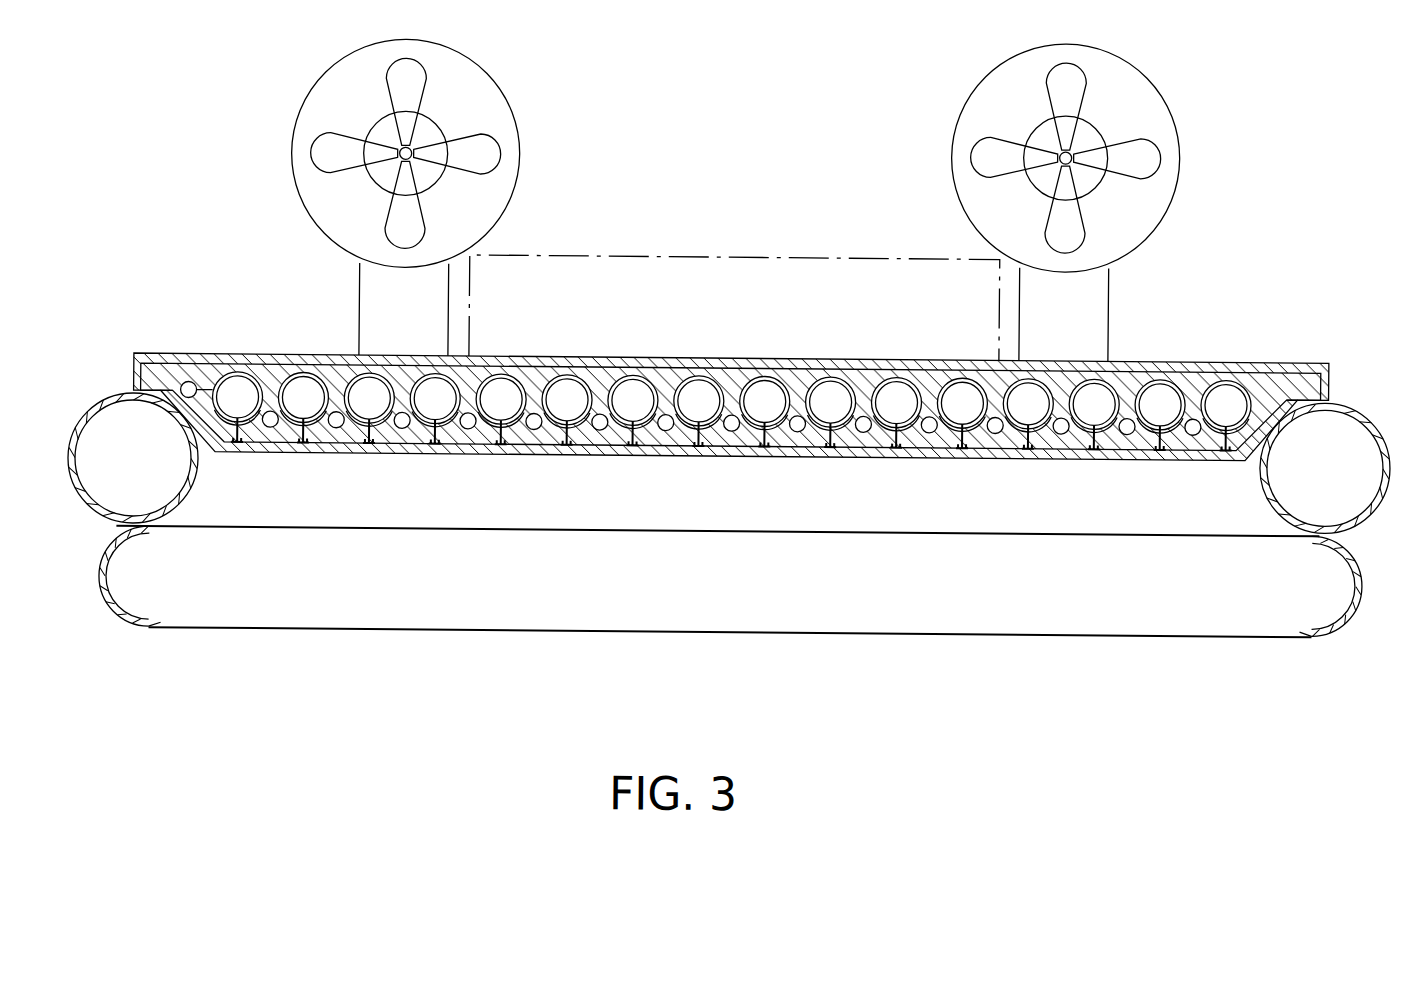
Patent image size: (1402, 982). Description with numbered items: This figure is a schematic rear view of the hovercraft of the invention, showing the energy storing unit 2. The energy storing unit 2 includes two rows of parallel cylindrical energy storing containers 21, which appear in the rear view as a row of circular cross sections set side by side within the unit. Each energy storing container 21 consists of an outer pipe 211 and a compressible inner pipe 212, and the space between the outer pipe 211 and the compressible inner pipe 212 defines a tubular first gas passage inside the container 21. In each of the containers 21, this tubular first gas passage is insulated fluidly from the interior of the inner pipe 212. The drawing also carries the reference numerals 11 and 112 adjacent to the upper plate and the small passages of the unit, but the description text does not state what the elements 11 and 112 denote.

The energy storing unit 2 is at (1313, 377).
The top plate 11 is at (1217, 357).
The energy storing container 21 is at (1267, 393).
The outer pipe 211 is at (1015, 441).
The compressible inner pipe 212 is at (1037, 424).
The air passages 112 is at (193, 378).